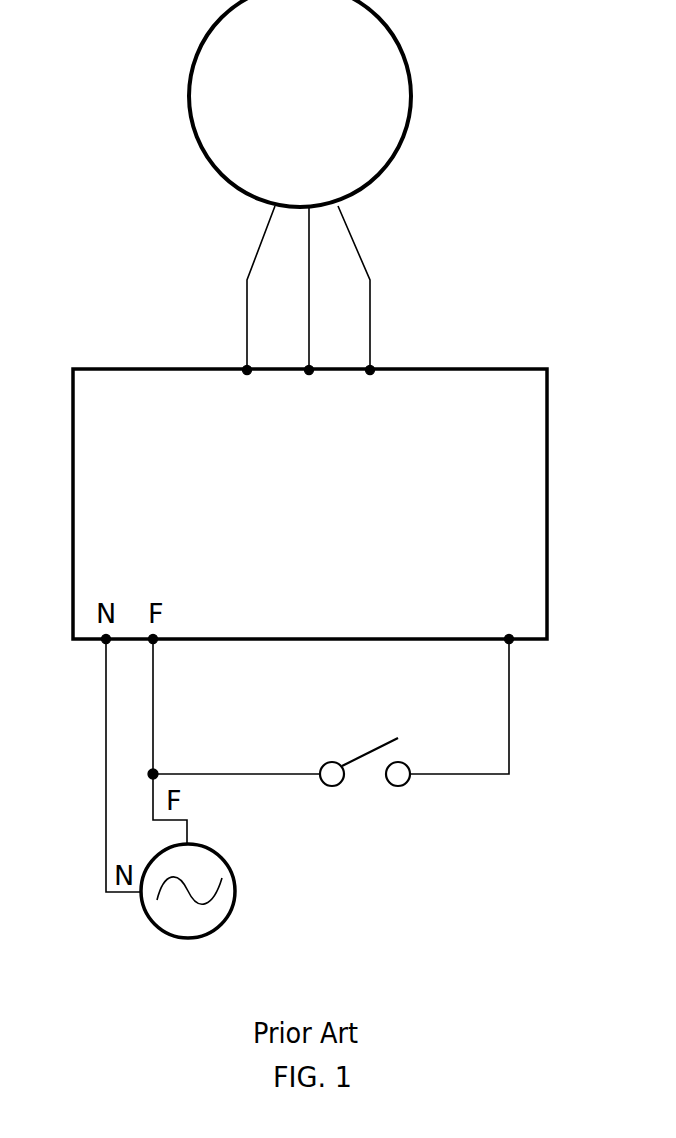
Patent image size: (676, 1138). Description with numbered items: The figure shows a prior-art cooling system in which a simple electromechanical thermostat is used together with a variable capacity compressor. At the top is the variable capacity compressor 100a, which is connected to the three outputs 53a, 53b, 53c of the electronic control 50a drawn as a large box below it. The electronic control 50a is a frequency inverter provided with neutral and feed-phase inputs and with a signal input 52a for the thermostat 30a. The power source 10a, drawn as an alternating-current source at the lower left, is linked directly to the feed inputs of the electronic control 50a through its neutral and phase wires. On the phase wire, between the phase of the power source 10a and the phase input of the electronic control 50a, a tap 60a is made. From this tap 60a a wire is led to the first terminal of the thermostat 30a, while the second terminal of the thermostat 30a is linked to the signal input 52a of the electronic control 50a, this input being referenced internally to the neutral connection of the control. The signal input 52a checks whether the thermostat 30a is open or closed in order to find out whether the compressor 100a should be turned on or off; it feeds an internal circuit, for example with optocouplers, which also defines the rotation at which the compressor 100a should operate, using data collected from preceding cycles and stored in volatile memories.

The variable capacity compressor 100a is at (300, 103).
The electronic control 50a is at (310, 504).
The output 53a is at (248, 309).
The output 53b is at (309, 309).
The output 53c is at (367, 309).
The signal input 52a is at (472, 688).
The tap 60a is at (163, 763).
The electronic thermostat 30a is at (365, 787).
The power source 10a is at (188, 913).